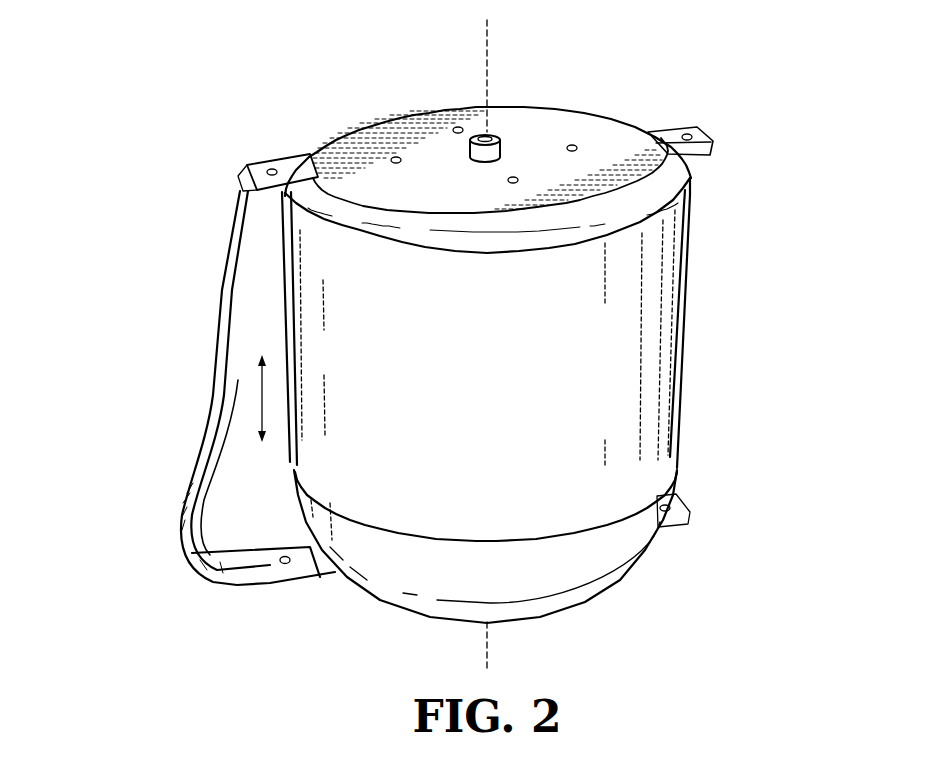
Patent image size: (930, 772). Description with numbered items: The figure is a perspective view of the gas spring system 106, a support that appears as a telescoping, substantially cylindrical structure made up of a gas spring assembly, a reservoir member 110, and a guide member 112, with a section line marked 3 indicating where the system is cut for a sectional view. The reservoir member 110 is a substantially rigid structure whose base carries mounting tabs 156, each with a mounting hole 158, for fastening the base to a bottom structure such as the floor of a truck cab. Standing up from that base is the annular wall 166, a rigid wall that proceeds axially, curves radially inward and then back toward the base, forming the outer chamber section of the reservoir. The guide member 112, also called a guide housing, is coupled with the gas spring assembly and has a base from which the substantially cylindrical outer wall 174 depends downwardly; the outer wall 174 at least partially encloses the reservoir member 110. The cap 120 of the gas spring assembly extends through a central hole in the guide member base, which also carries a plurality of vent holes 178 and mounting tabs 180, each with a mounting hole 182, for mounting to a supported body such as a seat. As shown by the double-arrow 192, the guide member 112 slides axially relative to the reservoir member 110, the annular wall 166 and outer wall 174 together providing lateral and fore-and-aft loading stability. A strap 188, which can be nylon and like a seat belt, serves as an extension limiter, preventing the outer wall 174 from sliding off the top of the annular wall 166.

The gas spring system 106 is at (131, 88).
The section line 3- 3 is at (487, 80).
The reservoir member 110 is at (610, 599).
The guide member 112 is at (541, 324).
The cap 120 is at (492, 133).
The mounting tabs 156 is at (487, 574).
The mounting hole 158 is at (284, 556).
The annular wall 166 is at (620, 557).
The outer wall 174 is at (650, 387).
The vent holes 178 is at (452, 128).
The mounting tabs 180 is at (247, 168).
The mounting hole 182 is at (264, 160).
The strap 188 is at (217, 385).
The double-arrow 192 is at (260, 403).